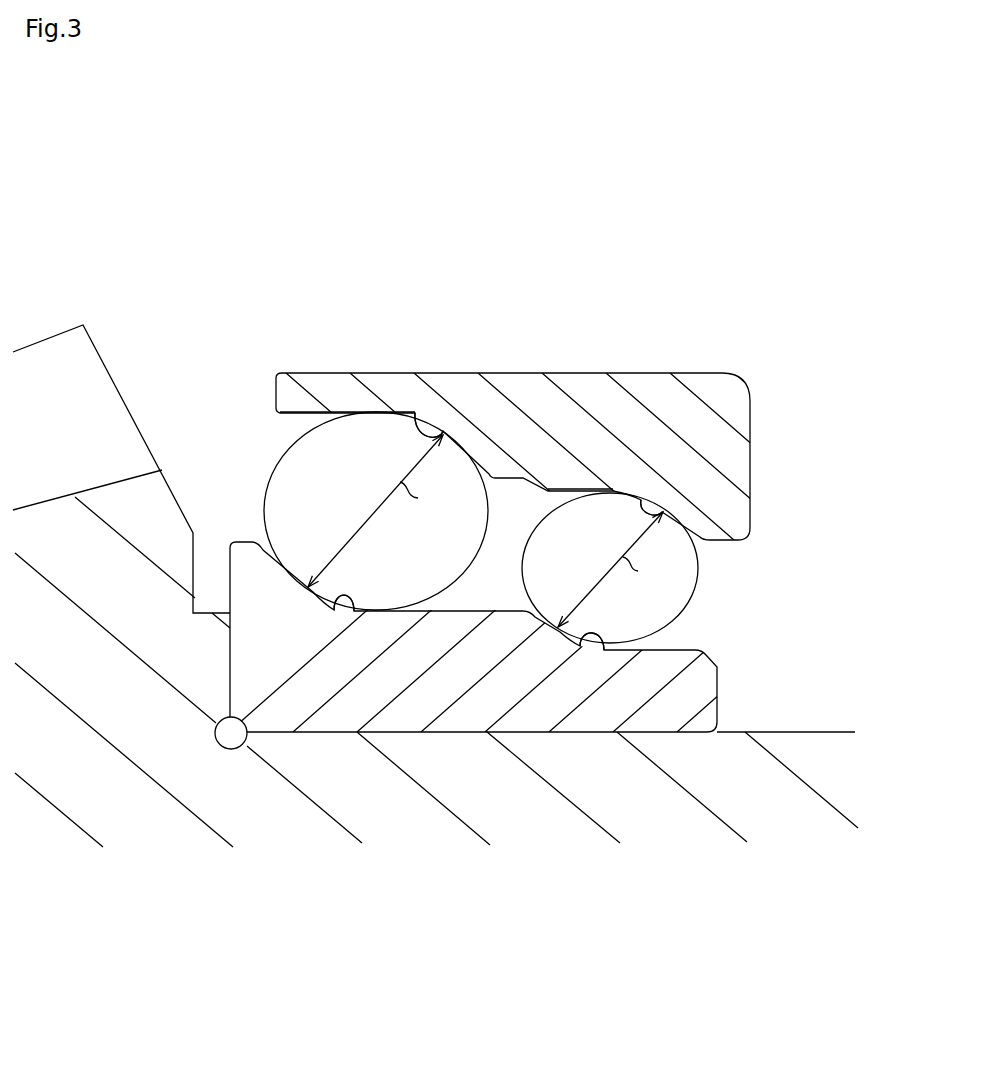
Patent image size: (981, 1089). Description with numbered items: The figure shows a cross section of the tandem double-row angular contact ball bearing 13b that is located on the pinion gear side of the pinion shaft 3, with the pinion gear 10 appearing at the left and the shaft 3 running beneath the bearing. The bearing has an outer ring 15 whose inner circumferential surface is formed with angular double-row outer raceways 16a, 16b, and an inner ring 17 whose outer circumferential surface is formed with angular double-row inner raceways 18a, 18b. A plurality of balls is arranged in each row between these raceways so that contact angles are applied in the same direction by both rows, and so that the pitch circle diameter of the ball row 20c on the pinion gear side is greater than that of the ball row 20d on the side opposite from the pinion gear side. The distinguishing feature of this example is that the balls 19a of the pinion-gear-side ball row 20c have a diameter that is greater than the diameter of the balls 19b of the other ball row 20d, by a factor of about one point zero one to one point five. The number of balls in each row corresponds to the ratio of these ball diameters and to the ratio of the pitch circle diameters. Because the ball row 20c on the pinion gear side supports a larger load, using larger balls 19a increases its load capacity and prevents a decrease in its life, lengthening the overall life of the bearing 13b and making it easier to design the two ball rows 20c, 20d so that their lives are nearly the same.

The pinion shaft 3 is at (768, 780).
The pinion gear 10 is at (47, 362).
The tandem double-row angular contact ball bearing 13b is at (728, 365).
The outer ring 15 is at (590, 394).
The outer raceway 16a is at (437, 427).
The outer raceway 16b is at (653, 508).
The inner ring 17 is at (653, 702).
The inner raceway 18a is at (352, 594).
The inner raceway 18b is at (602, 655).
The ball 19a is at (315, 468).
The ball 19b is at (683, 593).
The ball row 20c is at (390, 457).
The ball row 20d is at (562, 515).